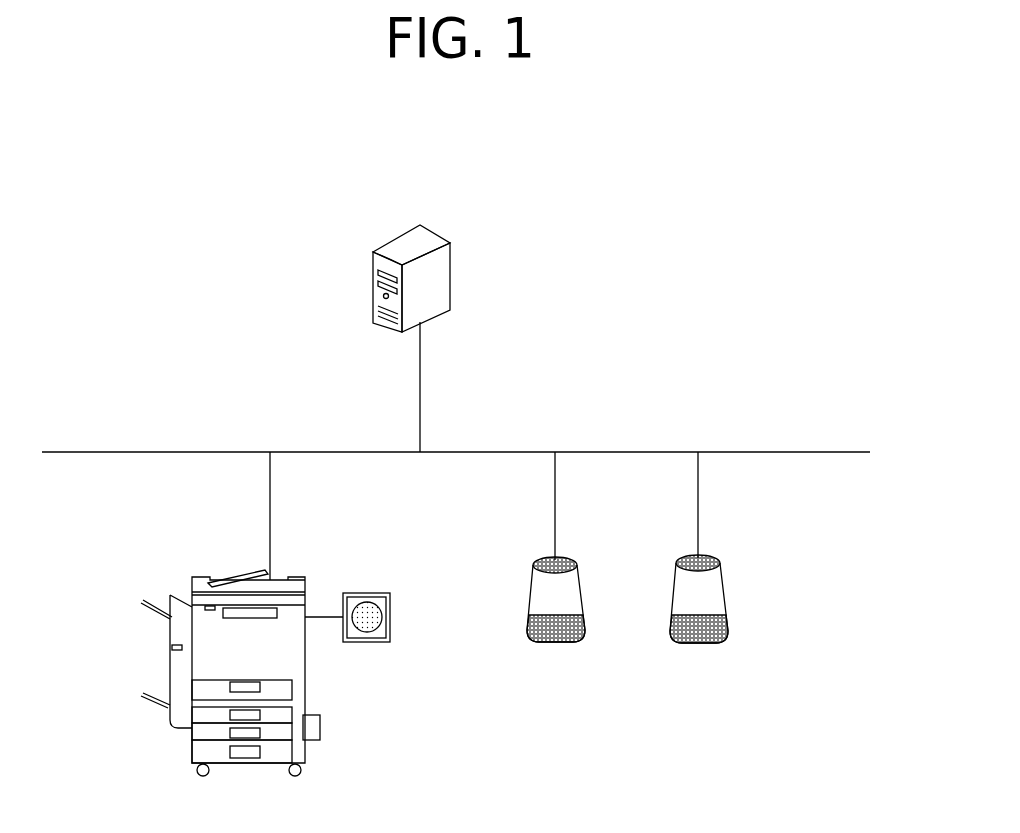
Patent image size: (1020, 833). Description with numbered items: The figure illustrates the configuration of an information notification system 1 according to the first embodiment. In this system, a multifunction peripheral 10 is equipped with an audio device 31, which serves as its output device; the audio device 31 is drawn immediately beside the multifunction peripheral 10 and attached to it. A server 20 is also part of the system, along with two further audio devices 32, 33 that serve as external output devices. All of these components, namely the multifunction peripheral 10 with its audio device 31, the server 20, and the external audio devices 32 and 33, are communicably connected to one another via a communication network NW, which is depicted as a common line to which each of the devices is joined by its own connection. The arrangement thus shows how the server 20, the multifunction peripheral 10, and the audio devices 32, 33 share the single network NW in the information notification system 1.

The information notification system 1 is at (779, 242).
The communication network NW is at (800, 452).
The multifunction peripheral 10 is at (192, 577).
The server 20 is at (437, 273).
The audio device 31 is at (370, 597).
The audio device 32 is at (578, 580).
The audio device 33 is at (725, 580).